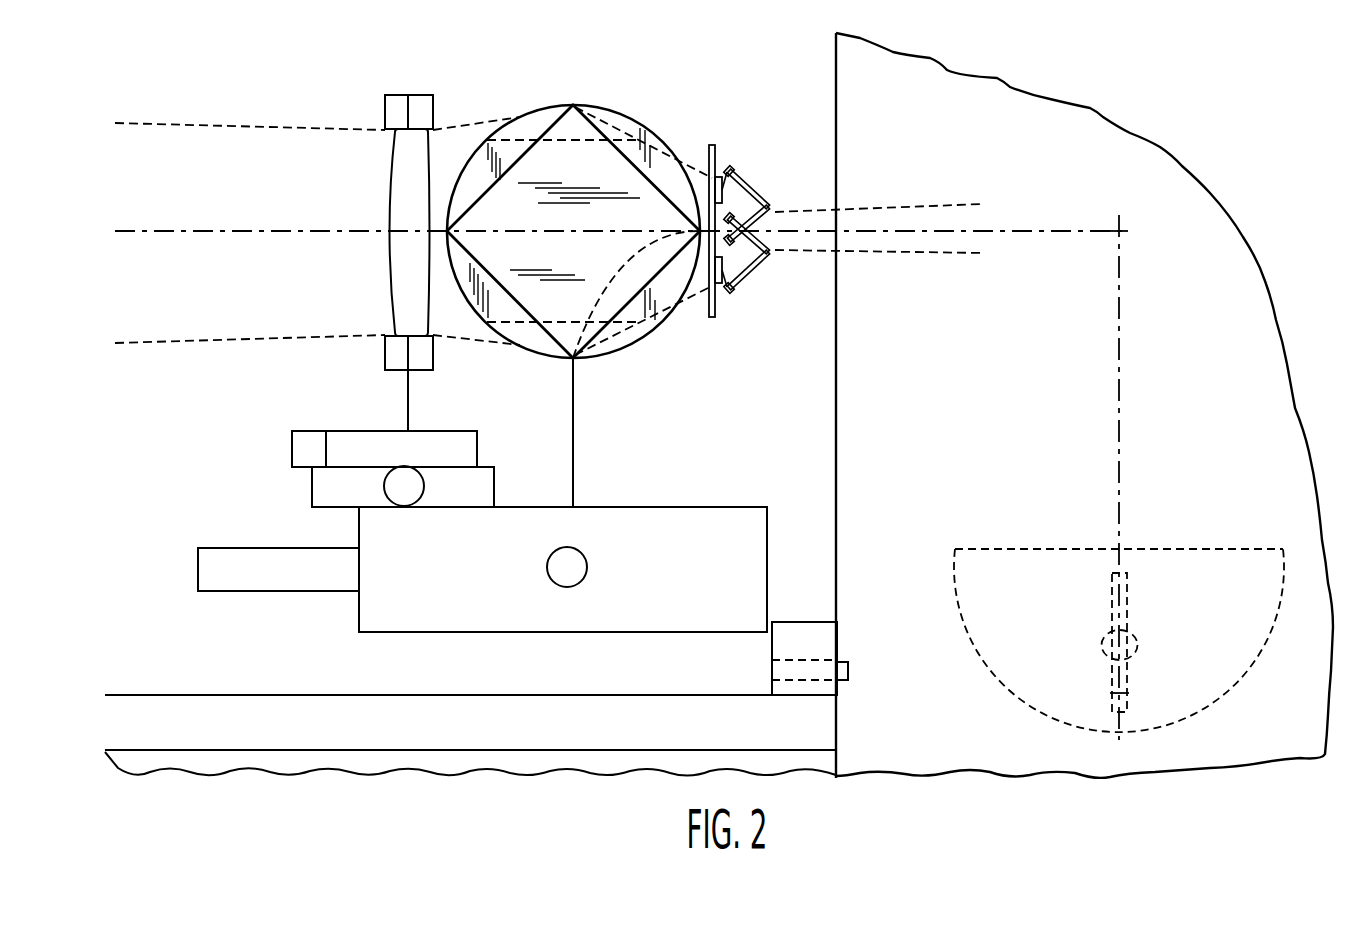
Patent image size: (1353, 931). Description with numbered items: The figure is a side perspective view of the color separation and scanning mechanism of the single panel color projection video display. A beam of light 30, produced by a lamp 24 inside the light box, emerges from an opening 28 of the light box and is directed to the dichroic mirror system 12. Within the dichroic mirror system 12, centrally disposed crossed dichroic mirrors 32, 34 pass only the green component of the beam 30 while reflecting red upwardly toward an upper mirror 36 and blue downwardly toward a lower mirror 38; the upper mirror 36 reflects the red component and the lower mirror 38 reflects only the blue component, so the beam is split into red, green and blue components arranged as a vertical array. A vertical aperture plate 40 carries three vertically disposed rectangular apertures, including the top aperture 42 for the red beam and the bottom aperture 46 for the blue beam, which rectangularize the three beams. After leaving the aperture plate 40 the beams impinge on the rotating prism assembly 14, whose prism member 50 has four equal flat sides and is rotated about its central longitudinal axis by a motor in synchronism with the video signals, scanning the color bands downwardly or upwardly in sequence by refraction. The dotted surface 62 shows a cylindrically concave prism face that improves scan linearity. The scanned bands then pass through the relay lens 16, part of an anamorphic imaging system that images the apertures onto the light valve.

The dichroic mirror system 12 is at (730, 147).
The rotating prism assembly 14 is at (571, 88).
The relay lens 16 is at (402, 88).
The lamp 24 is at (736, 285).
The opening 28 is at (835, 78).
The beam of light 30 is at (816, 206).
The crossed dichroic mirror 32 is at (766, 216).
The crossed dichroic mirror 34 is at (742, 262).
The upper mirror 36 is at (752, 177).
The lower mirror 38 is at (740, 292).
The vertical aperture plate 40 is at (712, 145).
The rectangular aperture 42 is at (709, 172).
The rectangular aperture 46 is at (717, 290).
The prism member 50 is at (543, 130).
The dotted surface 62 is at (627, 260).